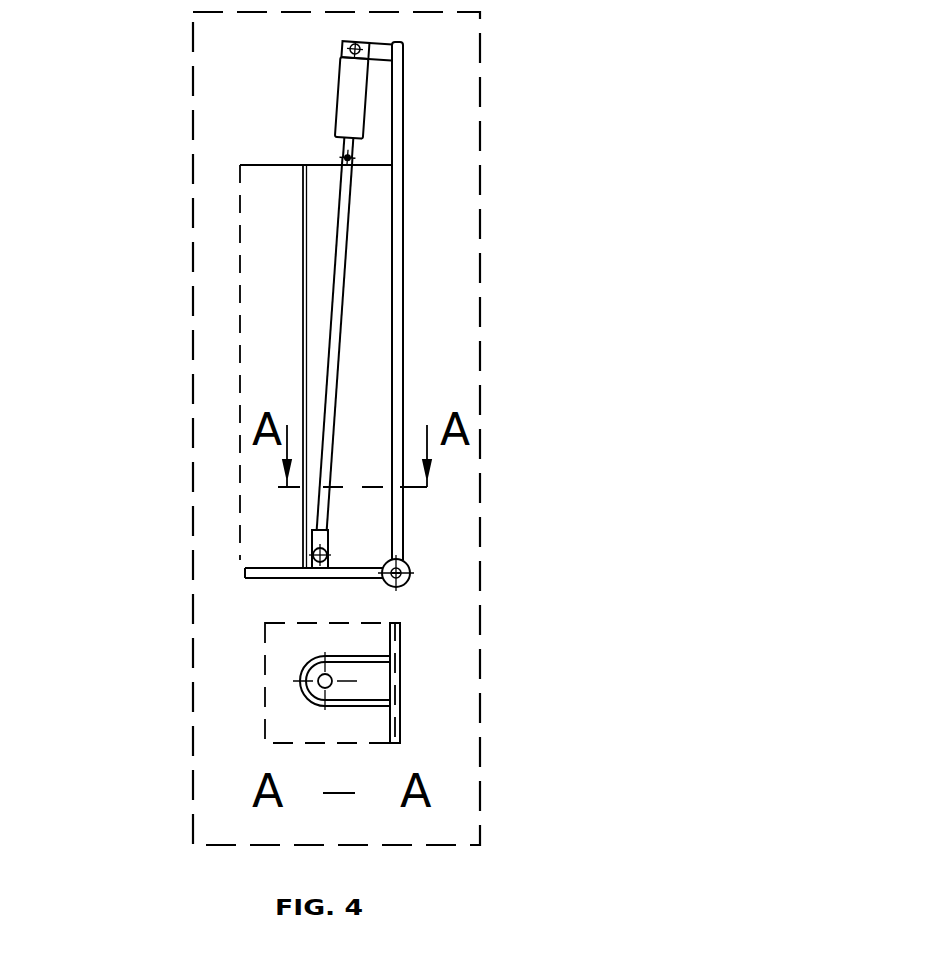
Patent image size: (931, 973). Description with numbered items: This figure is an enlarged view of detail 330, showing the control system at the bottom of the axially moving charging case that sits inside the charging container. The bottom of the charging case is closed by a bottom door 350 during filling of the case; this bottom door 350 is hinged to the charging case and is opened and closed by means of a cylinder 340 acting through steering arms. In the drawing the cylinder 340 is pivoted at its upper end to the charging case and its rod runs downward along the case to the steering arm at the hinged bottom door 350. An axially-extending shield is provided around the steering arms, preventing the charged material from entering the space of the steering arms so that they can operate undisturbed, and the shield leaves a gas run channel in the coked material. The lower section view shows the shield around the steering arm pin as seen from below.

The detail 330 is at (628, 347).
The cylinder 340 is at (366, 107).
The bottom door 350 is at (211, 498).